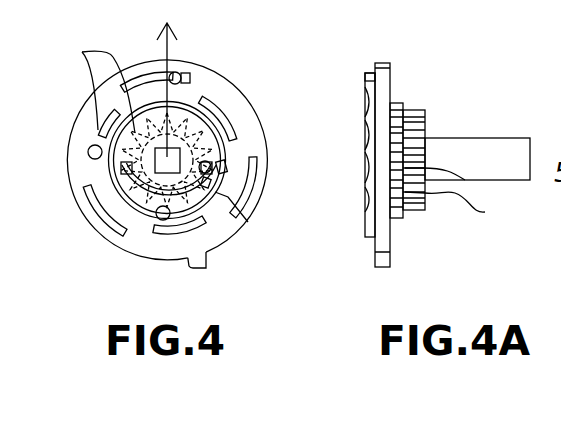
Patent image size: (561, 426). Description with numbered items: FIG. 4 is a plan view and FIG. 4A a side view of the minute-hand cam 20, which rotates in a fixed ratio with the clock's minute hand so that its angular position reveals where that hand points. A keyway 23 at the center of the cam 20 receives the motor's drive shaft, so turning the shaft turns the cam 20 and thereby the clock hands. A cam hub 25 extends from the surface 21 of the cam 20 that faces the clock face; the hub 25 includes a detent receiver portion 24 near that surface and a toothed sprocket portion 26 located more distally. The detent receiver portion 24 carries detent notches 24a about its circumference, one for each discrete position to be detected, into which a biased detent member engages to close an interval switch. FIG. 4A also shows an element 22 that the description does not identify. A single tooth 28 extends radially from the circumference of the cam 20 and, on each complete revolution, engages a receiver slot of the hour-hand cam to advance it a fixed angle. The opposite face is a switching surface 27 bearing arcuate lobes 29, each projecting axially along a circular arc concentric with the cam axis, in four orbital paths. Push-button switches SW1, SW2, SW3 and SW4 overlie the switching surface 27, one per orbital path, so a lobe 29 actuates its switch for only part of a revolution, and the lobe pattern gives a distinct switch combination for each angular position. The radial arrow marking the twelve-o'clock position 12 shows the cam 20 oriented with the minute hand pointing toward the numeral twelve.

In FIG. 4, the twelve-o'clock position 12 is at (168, 78).
In FIG. 4, the minute-hand cam 20 is at (92, 101).
In FIG. 4A, the minute-hand cam 20 is at (370, 69).
In FIG. 4A, the surface 21 is at (392, 68).
In FIG. 4A, the shaft 22 is at (500, 138).
In FIG. 4, the keyway 23 is at (153, 155).
In FIG. 4A, the detent receiver portion 24 is at (397, 218).
In FIG. 4A, the detent notches 24a is at (466, 209).
In FIG. 4A, the cam hub 25 is at (425, 93).
In FIG. 4A, the sprocket portion 26 is at (415, 212).
In FIG. 4, the switching surface 27 is at (248, 222).
In FIG. 4, the tooth 28 is at (206, 267).
In FIG. 4, the arcuate lobes 29 is at (82, 52).
In FIG. 4, the switch SW1 is at (214, 164).
In FIG. 4, the switch SW2 is at (160, 217).
In FIG. 4, the switch SW3 is at (88, 155).
In FIG. 4, the switch SW4 is at (183, 72).